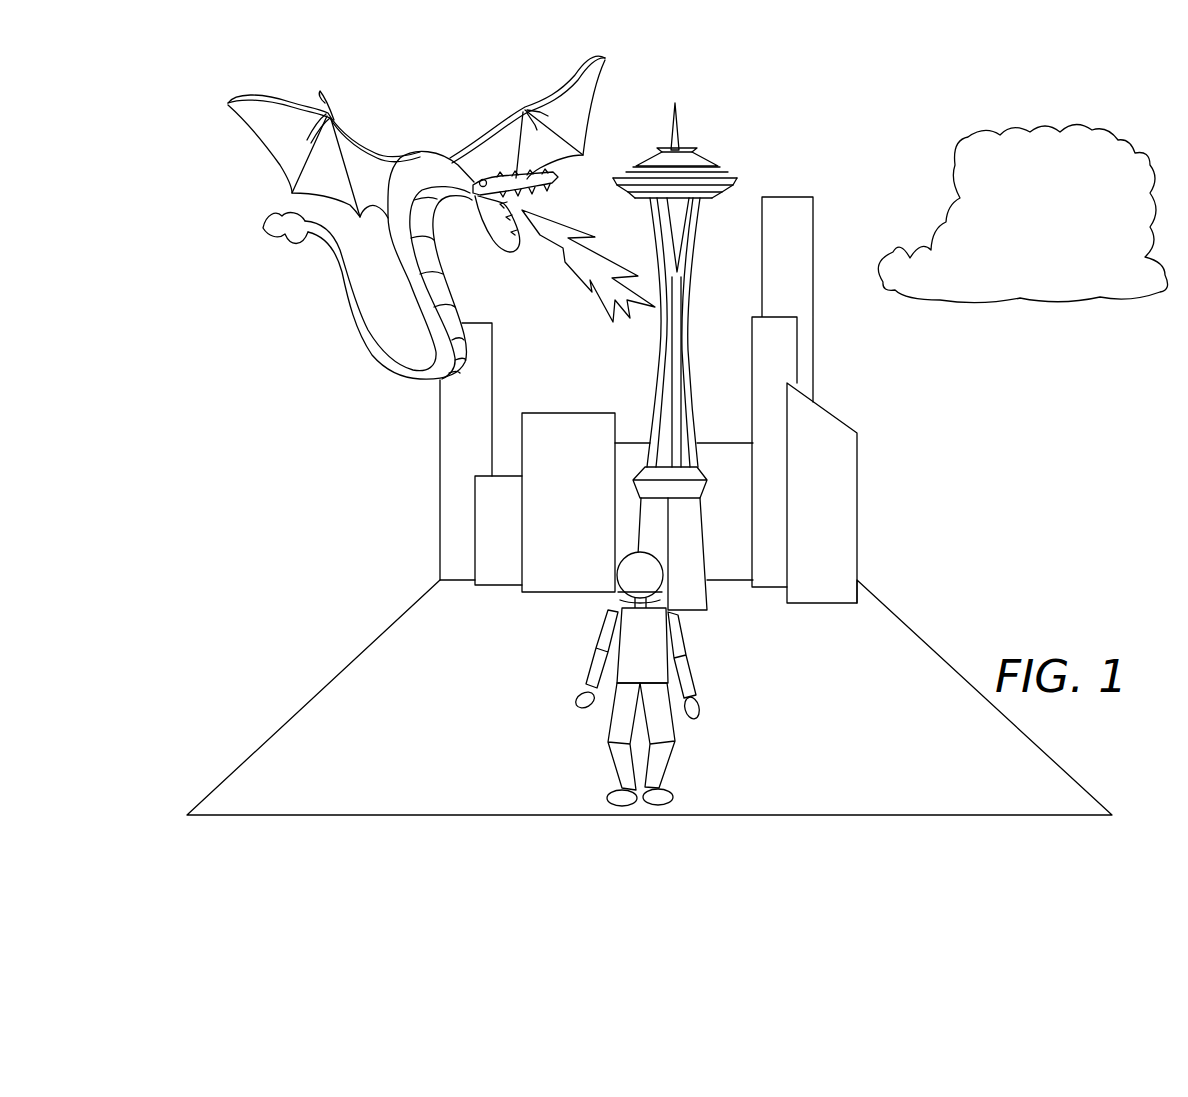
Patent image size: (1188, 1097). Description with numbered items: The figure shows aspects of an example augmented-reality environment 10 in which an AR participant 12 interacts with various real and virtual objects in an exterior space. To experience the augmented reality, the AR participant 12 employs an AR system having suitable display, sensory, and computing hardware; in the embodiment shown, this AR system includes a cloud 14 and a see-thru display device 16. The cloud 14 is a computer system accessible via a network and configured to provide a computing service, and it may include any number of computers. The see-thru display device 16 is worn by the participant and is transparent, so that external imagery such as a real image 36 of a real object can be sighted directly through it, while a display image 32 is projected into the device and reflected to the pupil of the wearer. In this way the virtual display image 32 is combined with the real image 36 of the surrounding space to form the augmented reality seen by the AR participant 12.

The augmented-reality environment 10 is at (318, 393).
The AR participant 12 is at (707, 673).
The cloud 14 is at (1034, 224).
The see-thru display device 16 is at (632, 560).
The display image 32 is at (455, 119).
The real image 36 is at (688, 303).